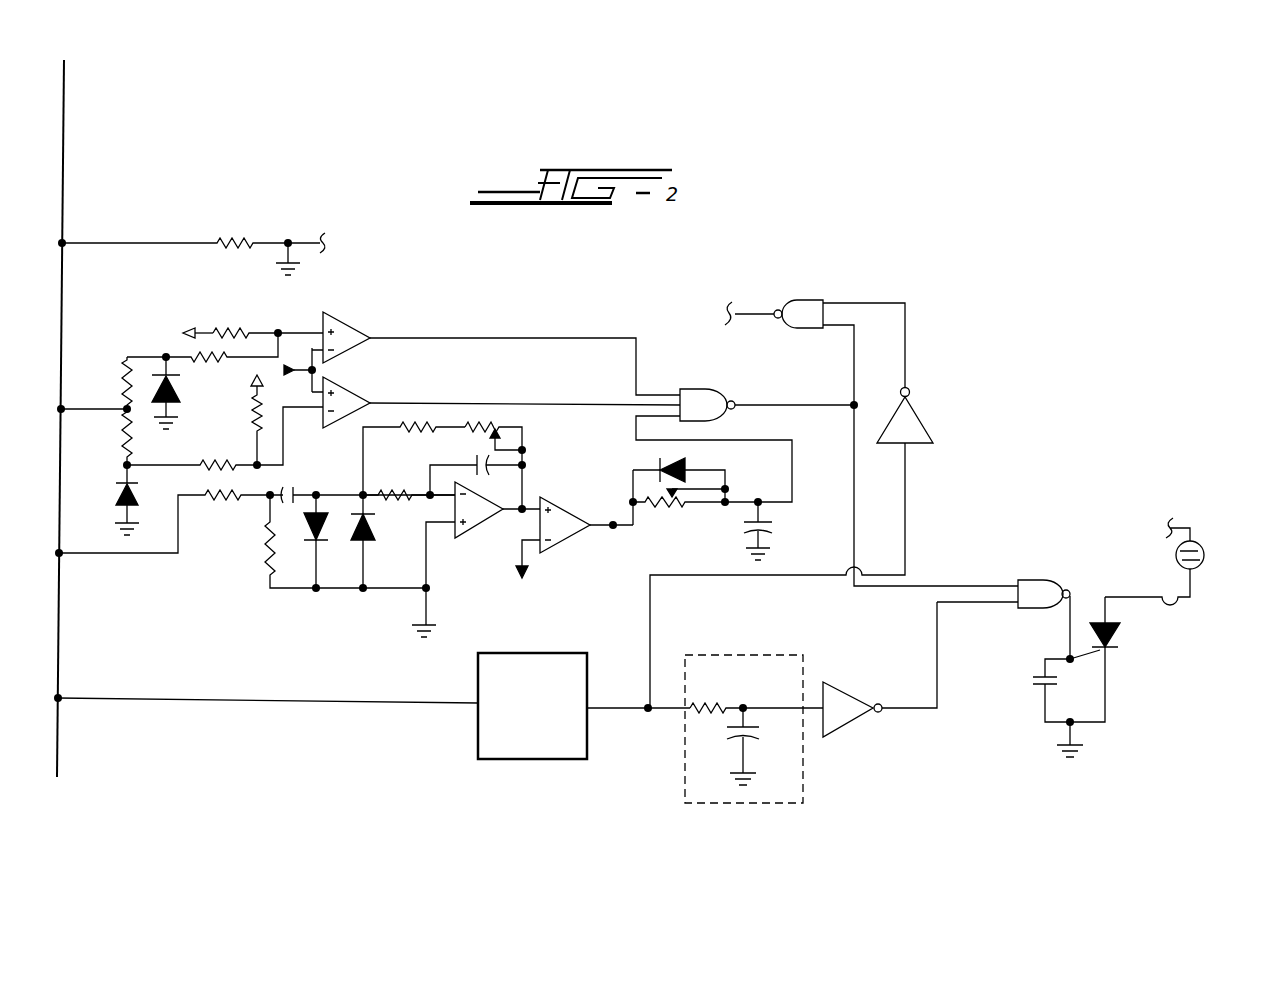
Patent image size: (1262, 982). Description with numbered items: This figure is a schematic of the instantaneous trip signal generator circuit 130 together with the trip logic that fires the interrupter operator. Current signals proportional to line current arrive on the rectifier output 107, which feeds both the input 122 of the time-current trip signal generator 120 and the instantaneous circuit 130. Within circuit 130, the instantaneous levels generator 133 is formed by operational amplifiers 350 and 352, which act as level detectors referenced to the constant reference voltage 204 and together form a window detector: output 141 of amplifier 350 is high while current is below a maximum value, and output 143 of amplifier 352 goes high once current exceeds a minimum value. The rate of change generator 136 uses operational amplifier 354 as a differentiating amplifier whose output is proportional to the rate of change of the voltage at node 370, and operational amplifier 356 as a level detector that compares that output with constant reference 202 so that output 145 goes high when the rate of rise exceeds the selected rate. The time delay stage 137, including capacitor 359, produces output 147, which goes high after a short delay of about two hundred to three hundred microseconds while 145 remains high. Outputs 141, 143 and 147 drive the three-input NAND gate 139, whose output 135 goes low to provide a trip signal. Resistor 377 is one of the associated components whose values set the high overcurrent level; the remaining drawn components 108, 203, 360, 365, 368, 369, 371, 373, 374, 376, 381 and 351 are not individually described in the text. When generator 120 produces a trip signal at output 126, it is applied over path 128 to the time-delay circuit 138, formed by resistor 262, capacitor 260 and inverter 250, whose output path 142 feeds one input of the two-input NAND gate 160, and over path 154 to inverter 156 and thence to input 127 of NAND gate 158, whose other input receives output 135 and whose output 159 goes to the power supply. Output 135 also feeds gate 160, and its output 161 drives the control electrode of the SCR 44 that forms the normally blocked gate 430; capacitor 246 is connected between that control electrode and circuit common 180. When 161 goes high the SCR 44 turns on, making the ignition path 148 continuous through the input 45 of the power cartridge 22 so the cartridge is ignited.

The rectifier output 107 is at (60, 584).
The resistor 108 is at (239, 236).
The reference voltage input 203 is at (180, 328).
The resistor 360 is at (232, 308).
The constant reference voltage 204 is at (284, 370).
The operational amplifier 350 is at (365, 307).
The operational amplifier 352 is at (346, 388).
The instantaneous trip signal generator circuit 130 is at (590, 331).
The instantaneous levels generator 133 is at (418, 366).
The output of operational amplifier 350 141 is at (612, 338).
The output of operational amplifier 352 143 is at (538, 403).
The resistor 365 is at (210, 505).
The capacitor 368 is at (297, 493).
The node 370 is at (265, 502).
The resistor 381 is at (345, 541).
The diode 376 is at (325, 525).
The resistor 377 is at (369, 538).
The resistor 369 is at (411, 497).
The resistor 373 is at (417, 436).
The potentiometer 374 is at (496, 428).
The capacitor 371 is at (478, 458).
The operational amplifier 354 is at (471, 530).
The operational amplifier 356 is at (560, 554).
The constant reference voltage 202 is at (528, 580).
The output of operational amplifier 356 145 is at (614, 509).
The time delay stage 137 is at (648, 452).
The potentiometer 351 is at (649, 512).
The capacitor 359 is at (774, 530).
The output of time delay stage 147 is at (806, 435).
The 3-input NAND gate 139 is at (717, 365).
The output of instantaneous trip signal generator 135 is at (850, 360).
The NAND gate 158 is at (799, 299).
The output of NAND gate 158 159 is at (768, 288).
The input of gate 158 127 is at (866, 301).
The inverter 156 is at (924, 422).
The path 154 is at (726, 578).
The 2-input NAND gate 160 is at (1060, 560).
The output of NAND gate 160 161 is at (1097, 575).
The output path of time-delay circuit 142 is at (884, 712).
The SCR 44 is at (1123, 636).
The normally blocked gate 430 is at (1148, 646).
The capacitor 246 is at (1044, 667).
The circuit common 180 is at (1078, 750).
The input of power cartridge 45 is at (1173, 602).
The power cartridge 22 is at (1206, 551).
The ignition path conductor 148 is at (1180, 525).
The input of time-current trip signal generator 122 is at (169, 698).
The rate of change (di/dt) generator 136 is at (390, 630).
The time-current trip signal generator 120 is at (478, 668).
The output of time-current trip signal generator 126 is at (606, 710).
The path 128 is at (682, 710).
The time-delay circuit 138 is at (766, 809).
The resistor 262 is at (748, 678).
The capacitor 260 is at (738, 722).
The inverter 250 is at (846, 692).